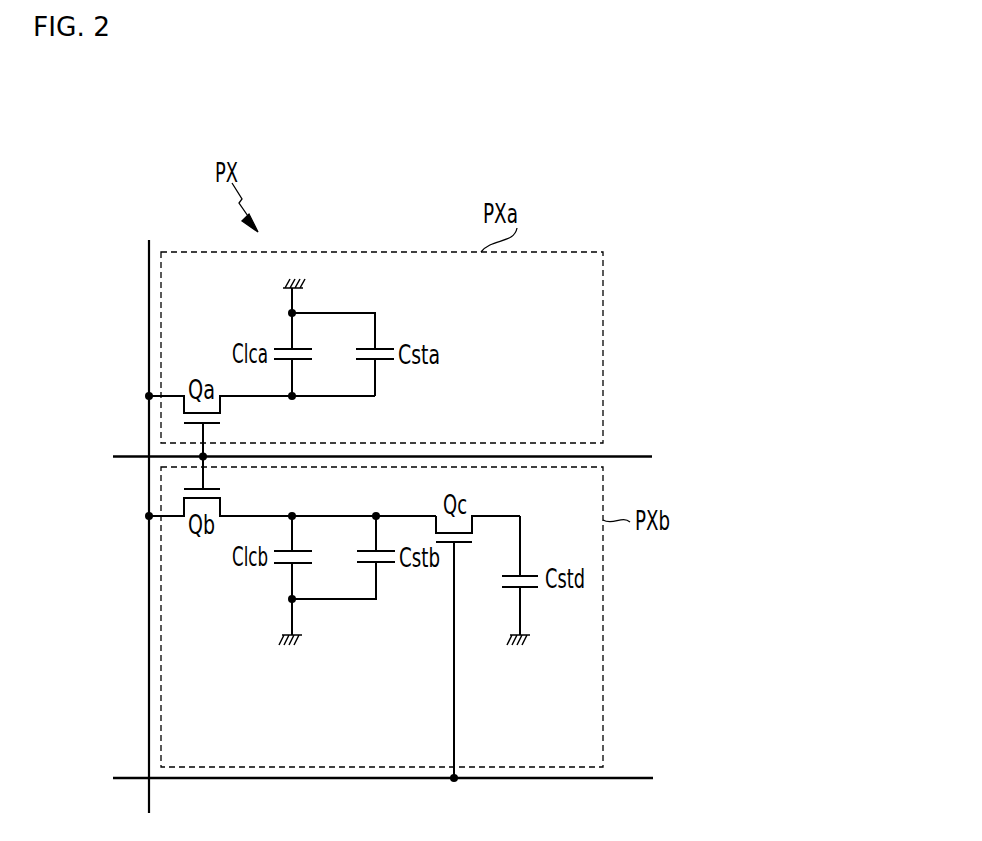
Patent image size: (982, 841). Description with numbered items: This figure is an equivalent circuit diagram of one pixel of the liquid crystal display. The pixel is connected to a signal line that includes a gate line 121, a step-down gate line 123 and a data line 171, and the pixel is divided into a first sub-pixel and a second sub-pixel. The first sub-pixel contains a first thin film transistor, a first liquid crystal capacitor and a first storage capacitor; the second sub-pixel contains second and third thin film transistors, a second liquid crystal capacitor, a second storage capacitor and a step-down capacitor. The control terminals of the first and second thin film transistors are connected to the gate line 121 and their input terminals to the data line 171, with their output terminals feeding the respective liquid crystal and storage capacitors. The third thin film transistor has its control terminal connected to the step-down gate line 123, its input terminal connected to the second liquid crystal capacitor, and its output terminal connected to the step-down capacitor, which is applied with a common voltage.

The data line 171 is at (149, 285).
The gate line 121 is at (128, 455).
The step-down gate line 123 is at (627, 777).